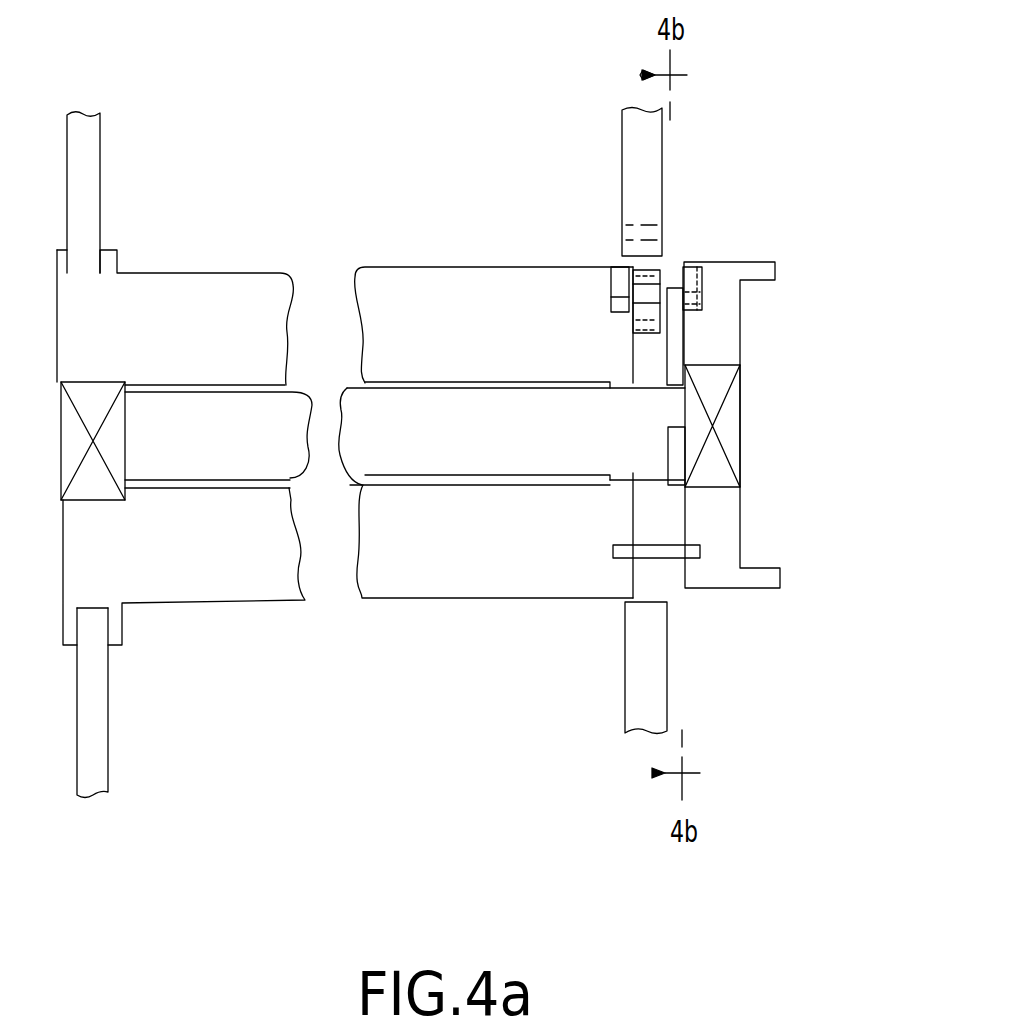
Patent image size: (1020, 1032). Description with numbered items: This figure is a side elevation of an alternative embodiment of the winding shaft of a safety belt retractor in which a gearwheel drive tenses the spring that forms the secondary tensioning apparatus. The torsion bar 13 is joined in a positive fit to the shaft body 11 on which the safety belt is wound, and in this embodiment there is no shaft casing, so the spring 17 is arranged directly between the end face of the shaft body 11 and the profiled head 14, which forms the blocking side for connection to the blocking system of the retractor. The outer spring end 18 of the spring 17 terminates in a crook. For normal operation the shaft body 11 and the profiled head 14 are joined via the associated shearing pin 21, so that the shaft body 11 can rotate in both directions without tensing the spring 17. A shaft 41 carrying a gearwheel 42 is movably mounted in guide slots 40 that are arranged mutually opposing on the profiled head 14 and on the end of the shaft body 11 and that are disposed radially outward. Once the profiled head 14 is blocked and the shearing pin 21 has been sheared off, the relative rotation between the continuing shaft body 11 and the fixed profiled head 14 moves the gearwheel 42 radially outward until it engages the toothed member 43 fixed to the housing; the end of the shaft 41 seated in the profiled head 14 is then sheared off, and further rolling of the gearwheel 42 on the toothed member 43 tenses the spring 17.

The shaft body 11 is at (448, 297).
The torsion bar 13 is at (220, 403).
The profiled head 14 is at (728, 508).
The spring 17 is at (675, 452).
The spring end 18 is at (676, 290).
The shearing pin 21 is at (667, 560).
The guide slots 40 is at (612, 278).
The shaft 41 is at (672, 305).
The gearwheel 42 is at (645, 330).
The toothed member 43 is at (652, 248).